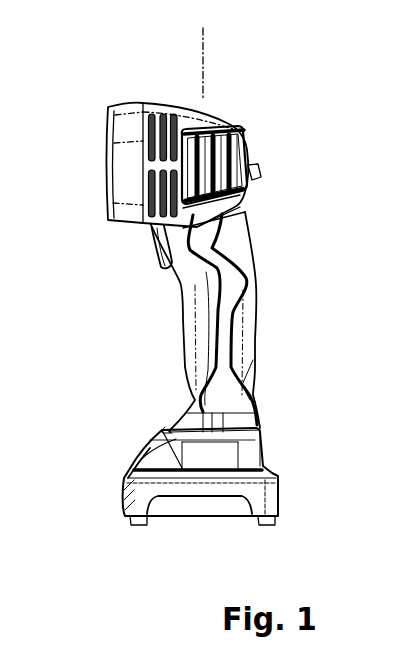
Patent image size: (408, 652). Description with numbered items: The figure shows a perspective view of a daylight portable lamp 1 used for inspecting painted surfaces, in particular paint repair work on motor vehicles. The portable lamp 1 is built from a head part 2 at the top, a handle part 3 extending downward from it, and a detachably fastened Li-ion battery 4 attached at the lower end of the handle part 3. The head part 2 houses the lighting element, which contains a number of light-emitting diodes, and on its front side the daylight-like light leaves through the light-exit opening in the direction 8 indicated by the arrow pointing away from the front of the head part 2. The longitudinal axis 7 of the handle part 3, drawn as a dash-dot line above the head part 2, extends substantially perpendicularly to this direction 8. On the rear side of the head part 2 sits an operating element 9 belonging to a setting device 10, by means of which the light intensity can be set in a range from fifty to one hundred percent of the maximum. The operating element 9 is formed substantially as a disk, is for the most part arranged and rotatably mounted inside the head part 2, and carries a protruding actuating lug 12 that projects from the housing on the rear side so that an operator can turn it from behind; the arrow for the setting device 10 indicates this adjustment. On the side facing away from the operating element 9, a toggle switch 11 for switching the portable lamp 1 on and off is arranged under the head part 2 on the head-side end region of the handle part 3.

The daylight portable lamp 1 is at (97, 103).
The head part 2 is at (233, 117).
The handle part 3 is at (258, 320).
The Li-ion battery 4 is at (280, 500).
The longitudinal axis 7 is at (203, 84).
The direction 8 is at (113, 157).
The operating element 9 is at (258, 169).
The setting device 10 is at (308, 163).
The toggle switch 11 is at (156, 250).
The actuating lug 12 is at (254, 171).